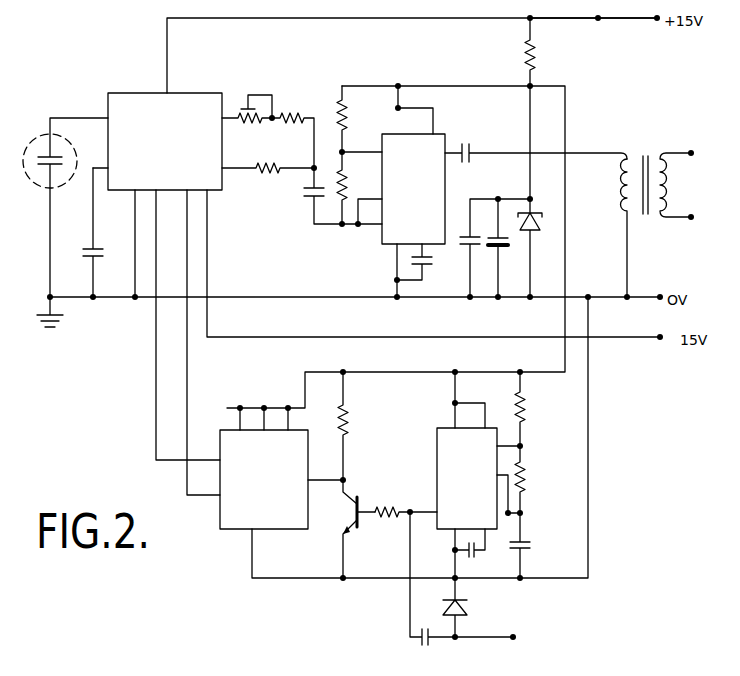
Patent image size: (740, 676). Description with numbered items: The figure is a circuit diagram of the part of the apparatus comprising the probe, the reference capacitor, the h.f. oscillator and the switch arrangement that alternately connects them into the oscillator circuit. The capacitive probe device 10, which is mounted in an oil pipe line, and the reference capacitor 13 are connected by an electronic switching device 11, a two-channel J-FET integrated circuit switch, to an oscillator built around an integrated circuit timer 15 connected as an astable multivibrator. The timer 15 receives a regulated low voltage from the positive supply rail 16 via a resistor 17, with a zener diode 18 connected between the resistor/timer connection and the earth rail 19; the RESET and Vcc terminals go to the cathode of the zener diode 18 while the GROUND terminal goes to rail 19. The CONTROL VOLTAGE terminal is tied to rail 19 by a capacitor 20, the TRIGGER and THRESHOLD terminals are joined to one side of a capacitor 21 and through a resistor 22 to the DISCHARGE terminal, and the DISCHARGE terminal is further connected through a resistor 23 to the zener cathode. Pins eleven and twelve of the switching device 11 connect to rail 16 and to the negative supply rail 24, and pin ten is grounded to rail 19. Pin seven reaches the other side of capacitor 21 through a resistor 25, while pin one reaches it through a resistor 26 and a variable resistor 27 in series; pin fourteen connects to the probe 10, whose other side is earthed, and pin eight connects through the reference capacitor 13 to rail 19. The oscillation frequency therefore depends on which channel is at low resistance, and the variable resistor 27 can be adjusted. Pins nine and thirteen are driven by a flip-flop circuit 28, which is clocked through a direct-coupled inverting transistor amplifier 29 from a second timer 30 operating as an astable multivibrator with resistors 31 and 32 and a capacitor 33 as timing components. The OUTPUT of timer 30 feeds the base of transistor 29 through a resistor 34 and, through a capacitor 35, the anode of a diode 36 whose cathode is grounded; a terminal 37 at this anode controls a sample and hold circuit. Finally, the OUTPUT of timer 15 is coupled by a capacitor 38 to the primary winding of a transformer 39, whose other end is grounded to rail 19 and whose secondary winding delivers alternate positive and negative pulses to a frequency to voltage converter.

The capacitive probe device 10 is at (43, 155).
The electronic switching device 11 is at (182, 92).
The reference capacitor 13 is at (80, 250).
The integrated circuit timer 15 is at (381, 242).
The +15V supply rail 16 is at (562, 20).
The resistor 17 is at (524, 56).
The zener diode 18 is at (535, 236).
The earth rail 19 is at (551, 299).
The capacitor 20 is at (426, 259).
The capacitor 21 is at (306, 197).
The resistor 22 is at (346, 197).
The resistor 23 is at (346, 126).
The −15V rail 24 is at (258, 338).
The resistor 25 is at (276, 176).
The resistor 26 is at (292, 112).
The variable resistor 27 is at (247, 116).
The flip-flop circuit 28 is at (236, 531).
The inverting transistor amplifier 29 is at (352, 531).
The timer 30 is at (441, 424).
The resistor 31 is at (527, 410).
The resistor 32 is at (527, 480).
The capacitor 33 is at (531, 545).
The resistor 34 is at (386, 504).
The capacitor 35 is at (422, 642).
The diode 36 is at (470, 602).
The terminal 37 is at (519, 638).
The capacitor 38 is at (468, 151).
The transformer 39 is at (621, 196).